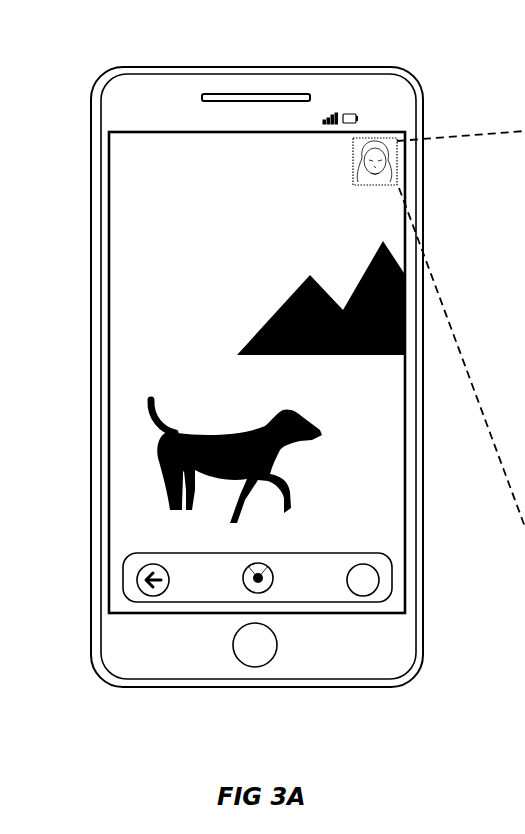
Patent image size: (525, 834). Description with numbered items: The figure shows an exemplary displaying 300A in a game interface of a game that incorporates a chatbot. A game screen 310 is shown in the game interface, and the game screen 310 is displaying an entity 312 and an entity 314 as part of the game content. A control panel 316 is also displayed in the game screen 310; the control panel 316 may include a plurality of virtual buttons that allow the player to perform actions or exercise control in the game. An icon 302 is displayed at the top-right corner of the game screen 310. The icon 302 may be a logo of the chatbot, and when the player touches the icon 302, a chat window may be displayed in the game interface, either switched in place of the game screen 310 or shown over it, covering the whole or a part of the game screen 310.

The exemplary displaying 300A is at (300, 42).
The game screen 310 is at (131, 160).
The icon 302 is at (405, 138).
The entity 314 is at (285, 272).
The entity 312 is at (253, 403).
The control panel 316 is at (125, 580).